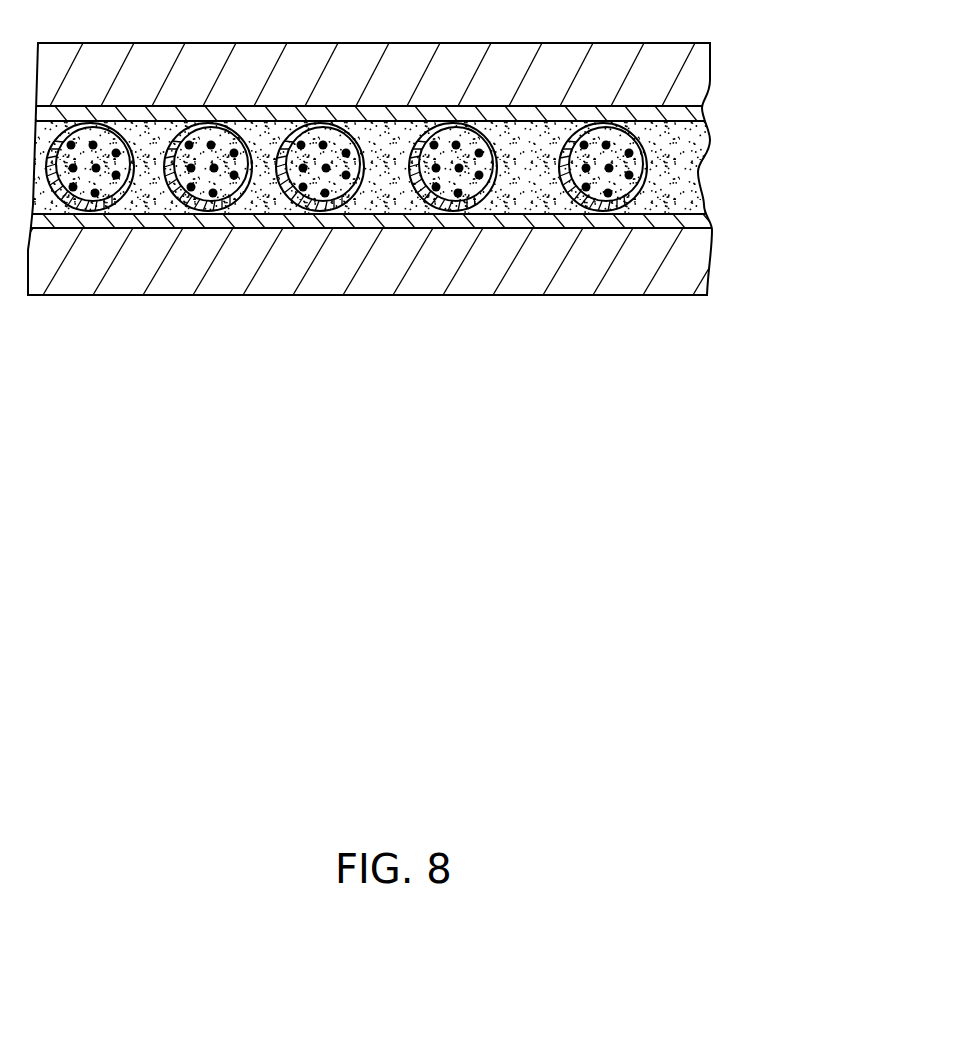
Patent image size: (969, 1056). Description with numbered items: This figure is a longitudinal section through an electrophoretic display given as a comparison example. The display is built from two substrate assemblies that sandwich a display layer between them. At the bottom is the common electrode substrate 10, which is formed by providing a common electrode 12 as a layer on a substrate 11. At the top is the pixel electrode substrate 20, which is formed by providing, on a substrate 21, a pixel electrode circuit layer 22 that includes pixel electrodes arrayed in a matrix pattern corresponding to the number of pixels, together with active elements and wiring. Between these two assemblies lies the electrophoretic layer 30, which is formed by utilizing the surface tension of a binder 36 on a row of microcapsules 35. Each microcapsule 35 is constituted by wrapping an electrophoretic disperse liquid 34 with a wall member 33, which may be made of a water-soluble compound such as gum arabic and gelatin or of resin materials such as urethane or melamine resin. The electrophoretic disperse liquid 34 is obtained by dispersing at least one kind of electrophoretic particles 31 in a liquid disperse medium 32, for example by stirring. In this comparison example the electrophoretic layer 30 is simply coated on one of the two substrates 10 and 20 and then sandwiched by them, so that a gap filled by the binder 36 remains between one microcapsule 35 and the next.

The common electrode substrate 10 is at (818, 215).
The substrate 11 is at (697, 270).
The common electrode 12 is at (703, 223).
The pixel electrode substrate 20 is at (818, 68).
The substrate 21 is at (700, 85).
The pixel electrode circuit layer 22 is at (700, 118).
The electrophoretic layer 30 is at (403, 261).
The electrophoretic particles 31 is at (628, 177).
The liquid disperse medium 32 is at (607, 203).
The wall member 33 is at (584, 208).
The electrophoretic disperse liquid 34 is at (346, 262).
The microcapsule 35 is at (568, 206).
The binder 36 is at (270, 208).